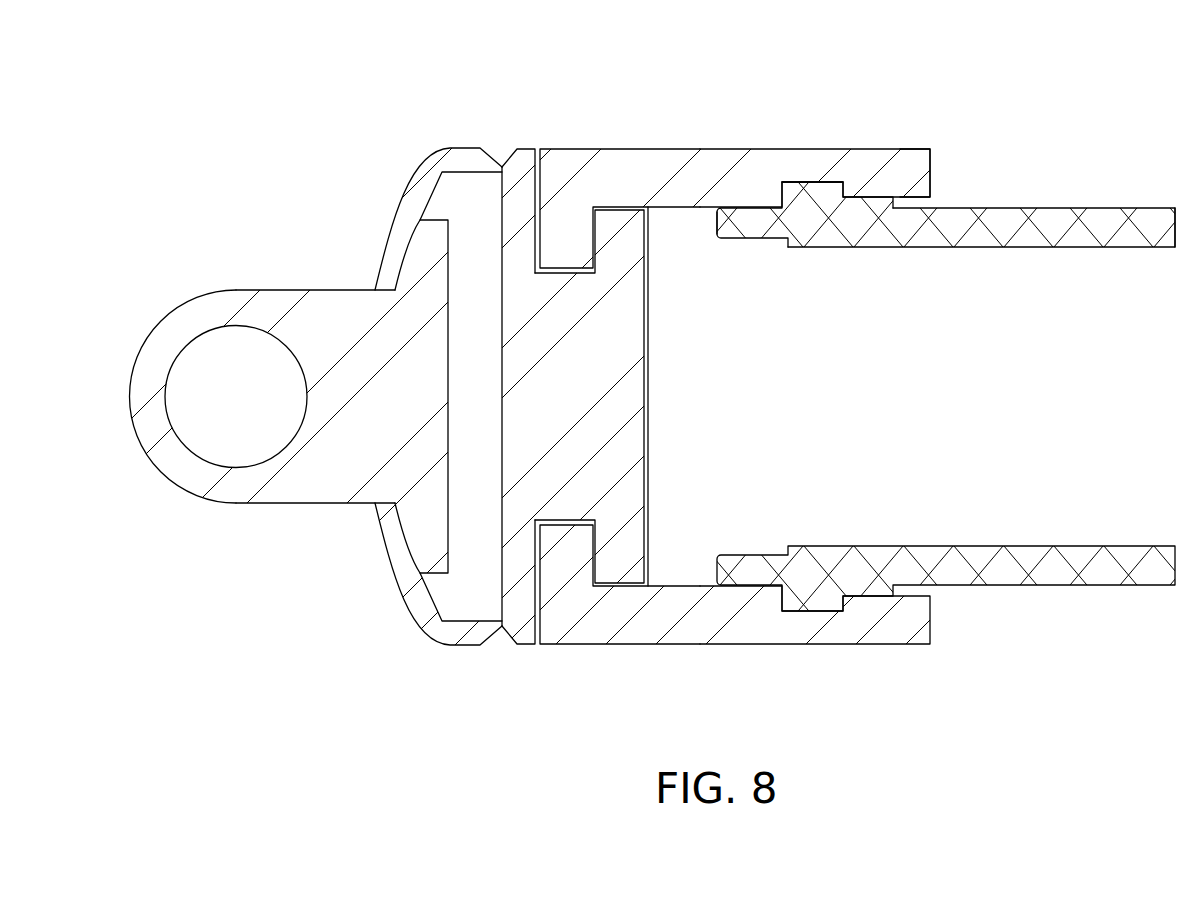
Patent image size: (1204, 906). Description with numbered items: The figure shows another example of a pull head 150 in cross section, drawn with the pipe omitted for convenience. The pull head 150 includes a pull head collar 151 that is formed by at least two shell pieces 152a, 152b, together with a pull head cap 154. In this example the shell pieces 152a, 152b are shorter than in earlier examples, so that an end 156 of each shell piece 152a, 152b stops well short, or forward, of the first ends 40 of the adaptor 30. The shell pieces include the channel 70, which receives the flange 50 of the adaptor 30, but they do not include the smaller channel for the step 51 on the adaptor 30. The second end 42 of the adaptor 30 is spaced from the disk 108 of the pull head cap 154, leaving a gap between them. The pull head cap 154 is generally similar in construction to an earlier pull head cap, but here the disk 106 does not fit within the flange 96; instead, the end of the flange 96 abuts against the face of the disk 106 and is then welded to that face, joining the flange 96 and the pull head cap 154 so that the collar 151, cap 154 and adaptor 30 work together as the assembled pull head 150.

The pull head 150 is at (465, 92).
The disk 106 is at (516, 156).
The pull head collar 151 is at (591, 137).
The shell piece 152a is at (699, 137).
The channel 70 is at (790, 182).
The flange 50 is at (838, 178).
The end 156 is at (919, 165).
The second end 42 is at (752, 222).
The adaptor 30 is at (982, 262).
The first ends 40 is at (1158, 228).
The disk 108 is at (627, 552).
The pull head cap 154 is at (338, 516).
The flange 96 is at (467, 632).
The shell piece 152b is at (806, 660).
The step 51 is at (882, 583).